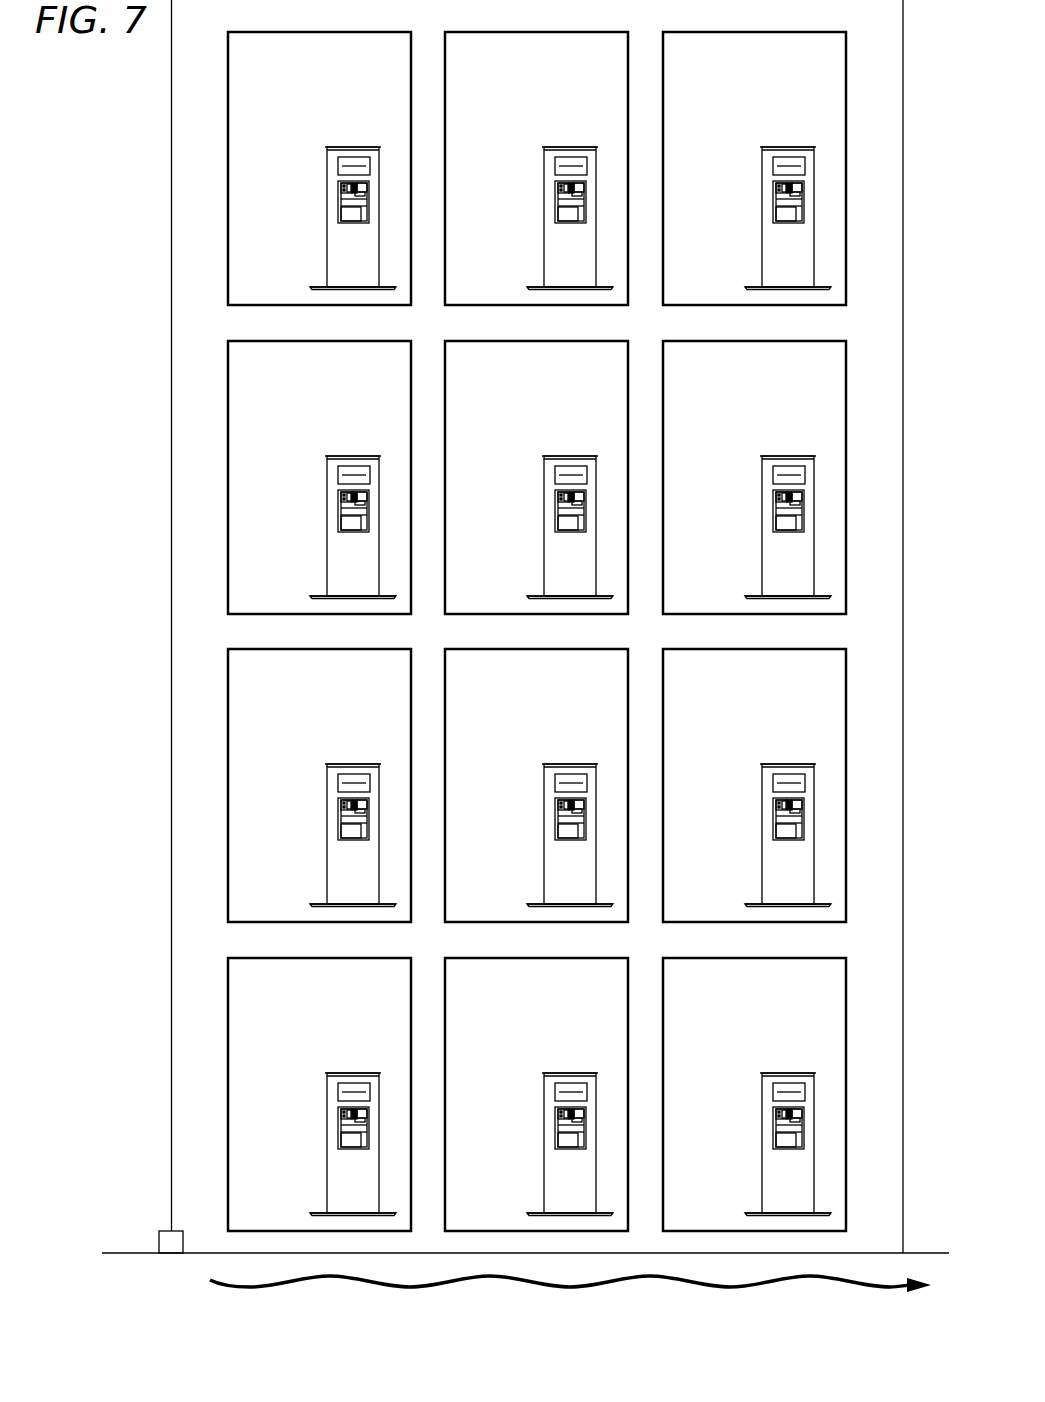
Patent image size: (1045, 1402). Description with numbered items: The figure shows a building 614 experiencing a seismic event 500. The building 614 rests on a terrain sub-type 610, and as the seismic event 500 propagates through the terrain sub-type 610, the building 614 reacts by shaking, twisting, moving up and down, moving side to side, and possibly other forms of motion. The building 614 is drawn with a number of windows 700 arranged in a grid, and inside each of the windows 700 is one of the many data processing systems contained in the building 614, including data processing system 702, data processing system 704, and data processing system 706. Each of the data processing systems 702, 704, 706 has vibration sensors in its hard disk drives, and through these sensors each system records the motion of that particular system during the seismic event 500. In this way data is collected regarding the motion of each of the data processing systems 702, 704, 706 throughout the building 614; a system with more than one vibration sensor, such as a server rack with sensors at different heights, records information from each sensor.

The windows 700 is at (340, 104).
The data processing system 702 is at (762, 202).
The data processing system 704 is at (545, 511).
The data processing system 706 is at (328, 1127).
The building 614 is at (164, 578).
The terrain sub-type 610 is at (137, 1252).
The seismic event 500 is at (211, 1282).